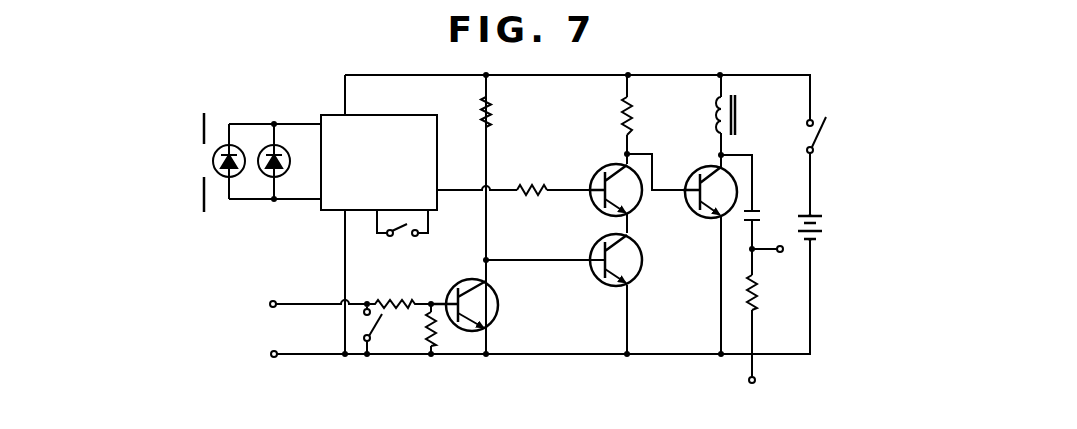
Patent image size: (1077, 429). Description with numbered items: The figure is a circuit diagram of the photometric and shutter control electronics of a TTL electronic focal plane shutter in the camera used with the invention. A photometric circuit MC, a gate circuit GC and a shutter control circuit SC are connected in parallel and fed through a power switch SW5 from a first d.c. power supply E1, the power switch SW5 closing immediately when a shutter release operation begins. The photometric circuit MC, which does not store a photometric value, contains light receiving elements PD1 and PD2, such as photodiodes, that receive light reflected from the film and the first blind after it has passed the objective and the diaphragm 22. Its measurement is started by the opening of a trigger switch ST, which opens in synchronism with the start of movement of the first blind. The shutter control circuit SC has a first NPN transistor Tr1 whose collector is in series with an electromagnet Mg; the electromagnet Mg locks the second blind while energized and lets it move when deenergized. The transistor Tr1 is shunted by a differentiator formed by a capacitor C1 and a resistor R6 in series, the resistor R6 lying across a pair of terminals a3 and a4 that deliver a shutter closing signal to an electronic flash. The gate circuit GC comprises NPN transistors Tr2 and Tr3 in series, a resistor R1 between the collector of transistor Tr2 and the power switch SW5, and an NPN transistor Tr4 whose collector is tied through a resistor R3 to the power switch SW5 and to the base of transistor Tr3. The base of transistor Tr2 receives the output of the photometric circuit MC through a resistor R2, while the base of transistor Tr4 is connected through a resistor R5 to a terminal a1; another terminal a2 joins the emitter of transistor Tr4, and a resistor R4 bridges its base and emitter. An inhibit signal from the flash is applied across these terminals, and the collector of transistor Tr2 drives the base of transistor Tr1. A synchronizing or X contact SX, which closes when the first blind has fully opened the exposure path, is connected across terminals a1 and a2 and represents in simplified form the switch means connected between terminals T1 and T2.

The light receiving element PD1 is at (226, 144).
The light receiving element PD2 is at (282, 145).
The diaphragm 22 is at (202, 212).
The photometric circuit MC is at (347, 179).
The resistor R1 is at (632, 113).
The resistor R2 is at (535, 186).
The resistor R3 is at (492, 112).
The resistor R4 is at (436, 340).
The resistor R5 is at (404, 300).
The resistor R6 is at (758, 302).
The first NPN transistor Tr1 is at (704, 218).
The NPN transistor Tr2 is at (604, 167).
The NPN transistor Tr3 is at (613, 290).
The NPN transistor Tr4 is at (500, 307).
The shutter control circuit SC is at (746, 63).
The gate circuit GC is at (556, 245).
The electromagnet Mg is at (738, 115).
The capacitor C1 is at (757, 217).
The power switch SW5 is at (846, 141).
The first d.c. power supply E1 is at (822, 228).
The trigger switch ST is at (402, 243).
The terminal T1 is at (368, 303).
The terminal T2 is at (371, 341).
The synchronizing contact SX is at (357, 322).
The terminal a1 is at (268, 306).
The terminal a2 is at (270, 355).
The terminal a3 is at (793, 249).
The terminal a4 is at (756, 381).